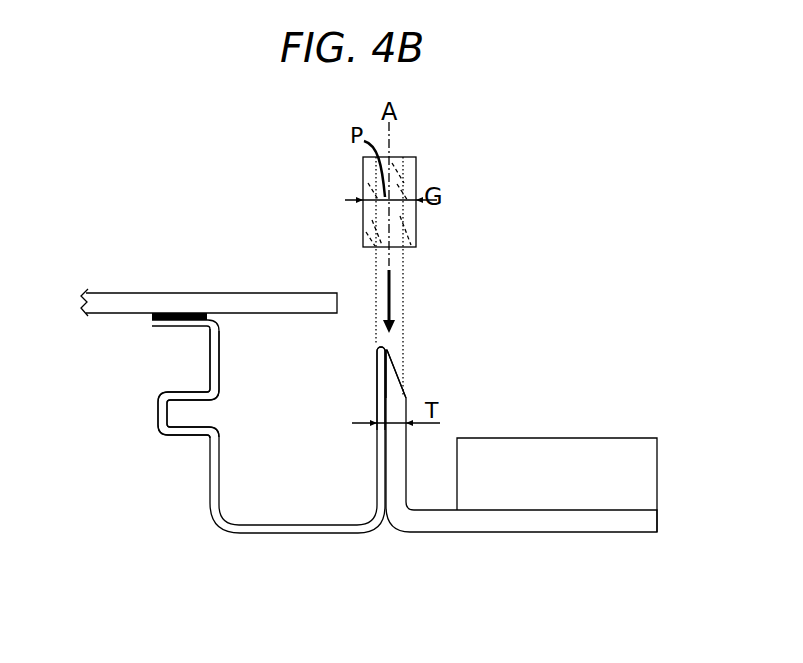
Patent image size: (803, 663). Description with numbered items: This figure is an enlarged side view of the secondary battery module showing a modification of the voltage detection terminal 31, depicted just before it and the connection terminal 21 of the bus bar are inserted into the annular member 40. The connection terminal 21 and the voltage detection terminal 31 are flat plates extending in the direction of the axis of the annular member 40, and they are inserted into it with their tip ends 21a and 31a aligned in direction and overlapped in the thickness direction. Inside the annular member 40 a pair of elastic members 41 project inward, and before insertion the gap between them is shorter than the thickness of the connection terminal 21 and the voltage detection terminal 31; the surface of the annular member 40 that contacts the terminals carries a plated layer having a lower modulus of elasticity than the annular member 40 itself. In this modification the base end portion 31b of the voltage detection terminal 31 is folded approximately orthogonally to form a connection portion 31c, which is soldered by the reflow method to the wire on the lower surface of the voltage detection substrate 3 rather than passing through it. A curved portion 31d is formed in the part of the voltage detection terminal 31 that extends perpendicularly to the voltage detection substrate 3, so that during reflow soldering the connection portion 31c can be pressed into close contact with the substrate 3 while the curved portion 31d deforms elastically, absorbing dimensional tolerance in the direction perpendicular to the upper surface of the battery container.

The voltage detection substrate 3 is at (138, 292).
The voltage detection terminal 31 is at (300, 535).
The tip end of the voltage detection terminal 31a is at (376, 346).
The base end portion of the voltage detection terminal 31b is at (221, 356).
The connection portion 31c is at (160, 331).
The curved portion 31d is at (158, 418).
The connection terminal 21 is at (525, 535).
The tip end of the connection terminal 21a is at (392, 341).
The annular member 40 is at (437, 157).
The elastic members 41 is at (375, 198).